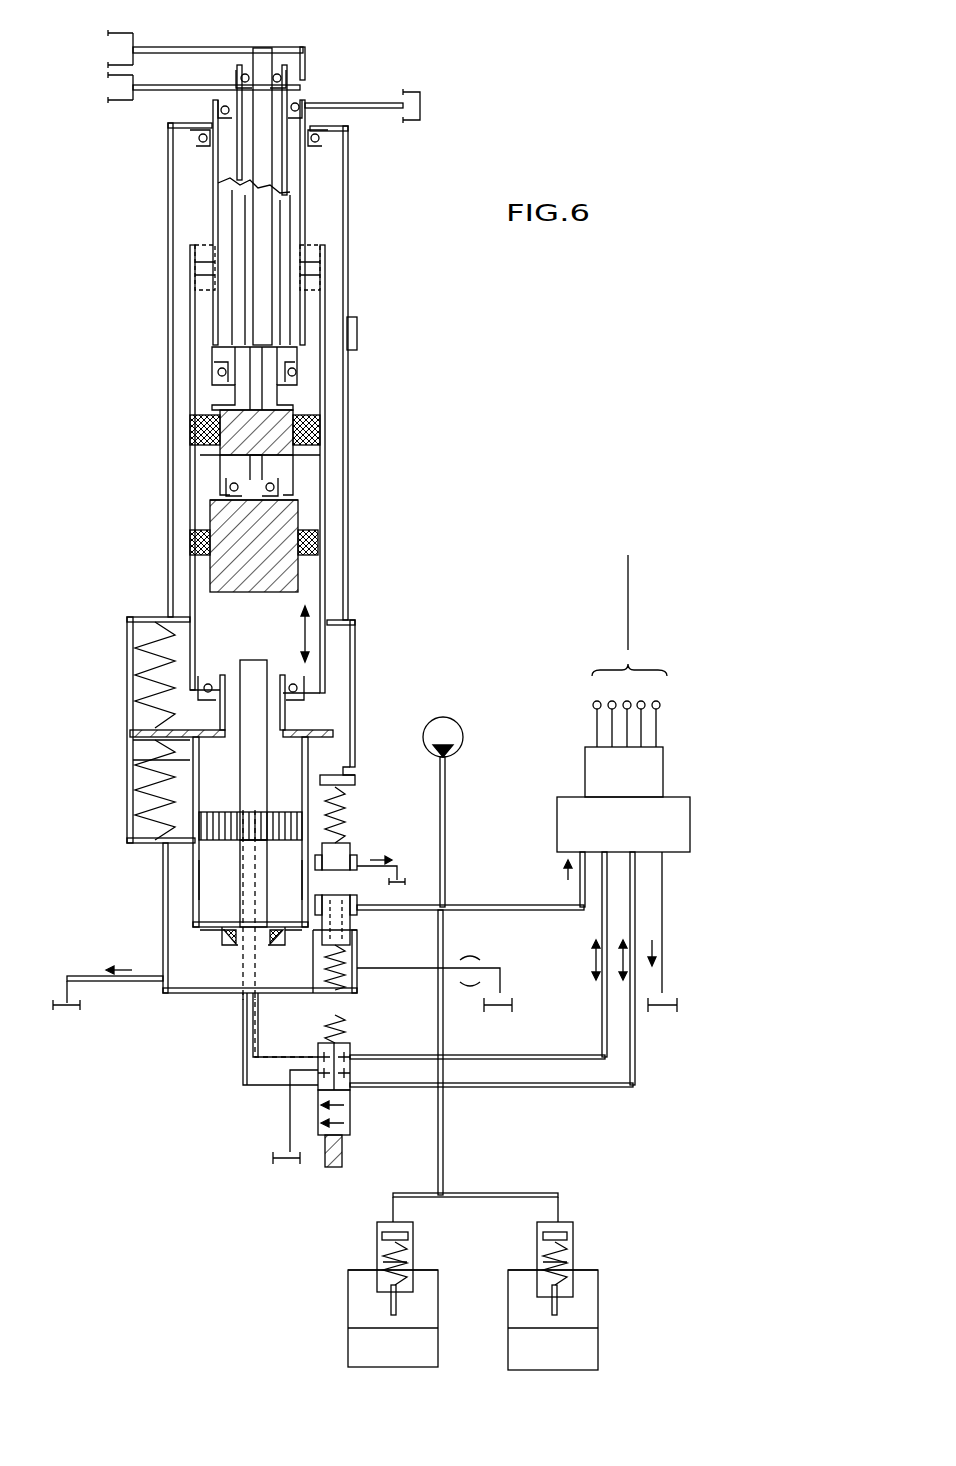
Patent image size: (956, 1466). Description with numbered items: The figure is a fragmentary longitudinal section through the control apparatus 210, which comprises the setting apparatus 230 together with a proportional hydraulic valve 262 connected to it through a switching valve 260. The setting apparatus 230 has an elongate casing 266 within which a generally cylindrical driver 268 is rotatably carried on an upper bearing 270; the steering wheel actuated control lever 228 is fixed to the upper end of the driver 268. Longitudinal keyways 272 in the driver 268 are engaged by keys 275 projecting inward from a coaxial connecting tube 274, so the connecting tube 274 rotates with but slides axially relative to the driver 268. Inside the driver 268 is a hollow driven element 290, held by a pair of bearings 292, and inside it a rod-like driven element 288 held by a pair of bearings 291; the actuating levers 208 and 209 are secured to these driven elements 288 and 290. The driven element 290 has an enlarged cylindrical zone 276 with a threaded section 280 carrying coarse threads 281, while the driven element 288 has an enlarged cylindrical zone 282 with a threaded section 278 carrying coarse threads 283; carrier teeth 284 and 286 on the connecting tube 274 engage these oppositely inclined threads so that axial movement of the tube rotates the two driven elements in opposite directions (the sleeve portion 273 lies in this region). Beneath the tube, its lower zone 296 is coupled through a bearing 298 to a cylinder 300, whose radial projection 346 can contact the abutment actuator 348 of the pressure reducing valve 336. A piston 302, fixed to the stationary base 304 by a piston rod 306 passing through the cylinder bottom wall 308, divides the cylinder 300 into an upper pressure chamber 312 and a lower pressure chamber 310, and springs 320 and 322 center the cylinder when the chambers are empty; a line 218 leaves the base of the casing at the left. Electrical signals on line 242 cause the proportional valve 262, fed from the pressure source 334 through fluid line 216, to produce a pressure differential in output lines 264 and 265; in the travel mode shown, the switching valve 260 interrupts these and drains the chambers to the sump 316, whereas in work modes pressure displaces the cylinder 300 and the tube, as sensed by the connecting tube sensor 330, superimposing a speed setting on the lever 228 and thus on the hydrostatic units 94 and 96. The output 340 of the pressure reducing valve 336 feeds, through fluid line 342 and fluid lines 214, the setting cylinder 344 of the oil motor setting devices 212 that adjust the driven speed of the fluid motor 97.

The control apparatus 210 is at (543, 480).
The actuating lever 208 is at (172, 47).
The actuating lever 209 is at (160, 92).
The steering wheel actuated control lever 228 is at (372, 110).
The driven element 288 is at (262, 165).
The driver 268 is at (218, 208).
The driven element 290 is at (300, 200).
The keyways 272 is at (233, 228).
The inner sleeve 273 is at (244, 250).
The bearings 291 is at (282, 75).
The bearings 292 is at (300, 105).
The upper bearing 270 is at (200, 138).
The casing 266 is at (170, 190).
The connecting tube 274 is at (190, 320).
The setting apparatus 230 is at (325, 580).
The keys 275 is at (318, 278).
The connecting tube sensor 330 is at (357, 328).
The enlarged cylindrical zone 276 is at (213, 385).
The threaded section 280 is at (220, 420).
The carrier teeth 284 is at (320, 425).
The coarse threads 281 is at (300, 465).
The enlarged cylindrical zone 282 is at (222, 480).
The threaded section 278 is at (218, 518).
The coarse threads 283 is at (300, 520).
The carrier teeth 286 is at (318, 545).
The spring 320 is at (130, 640).
The spring 322 is at (137, 818).
The upper pressure chamber 312 is at (175, 790).
The cylinder bottom wall 308 is at (190, 752).
The lower zone 296 is at (195, 660).
The bearing 298 is at (204, 690).
The radial projection 346 is at (345, 740).
The abutment actuator 348 is at (355, 782).
The pressure reducing valve 336 is at (350, 860).
The output 340 is at (352, 975).
The cylinder 300 is at (193, 915).
The piston 302 is at (199, 838).
The lower pressure chamber 310 is at (193, 885).
The piston rod 306 is at (228, 950).
The stationary base 304 is at (165, 995).
The return line 218 is at (105, 990).
The fluid line 342 is at (440, 1028).
The switching valve 260 is at (350, 1120).
The drain or sump 316 is at (270, 1160).
The fluid line 216 is at (447, 830).
The source of pressurized hydraulic fluid 334 is at (452, 722).
The proportional hydraulic valve 262 is at (568, 797).
The line 242 is at (628, 600).
The hydraulic output line 264 is at (560, 1055).
The hydraulic output line 265 is at (625, 1095).
The fluid lines 214 is at (390, 1205).
The setting cylinder 344 is at (377, 1242).
The oil motor setting devices 212 is at (385, 1268).
The fluid motor 97 is at (348, 1300).
The hydrostatic unit 94 is at (348, 1328).
The hydrostatic unit 96 is at (598, 1328).